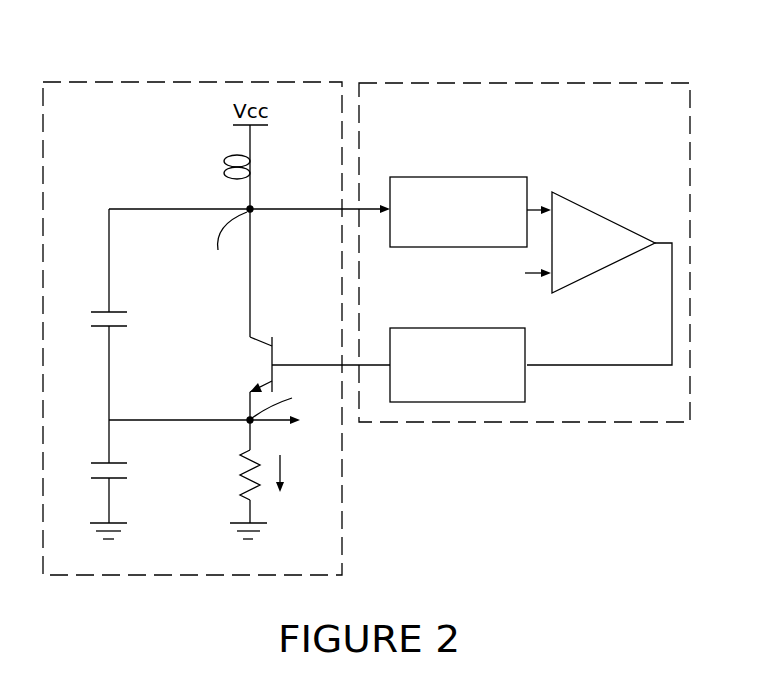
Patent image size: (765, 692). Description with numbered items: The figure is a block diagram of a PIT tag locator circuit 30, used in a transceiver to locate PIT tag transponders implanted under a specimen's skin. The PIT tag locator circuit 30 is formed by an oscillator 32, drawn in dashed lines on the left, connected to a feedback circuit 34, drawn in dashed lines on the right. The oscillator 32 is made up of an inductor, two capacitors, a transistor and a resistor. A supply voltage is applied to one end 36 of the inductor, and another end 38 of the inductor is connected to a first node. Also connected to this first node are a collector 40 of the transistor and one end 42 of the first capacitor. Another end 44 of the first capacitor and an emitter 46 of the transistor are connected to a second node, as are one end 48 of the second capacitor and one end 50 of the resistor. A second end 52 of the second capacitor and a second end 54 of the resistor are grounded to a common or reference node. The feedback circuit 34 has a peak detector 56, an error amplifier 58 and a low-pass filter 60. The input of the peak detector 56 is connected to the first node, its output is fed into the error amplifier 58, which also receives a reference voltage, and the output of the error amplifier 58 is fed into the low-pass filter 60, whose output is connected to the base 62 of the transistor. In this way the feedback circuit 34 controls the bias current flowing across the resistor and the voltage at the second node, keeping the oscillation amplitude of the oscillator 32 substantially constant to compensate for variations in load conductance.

The PIT tag locator circuit 30 is at (565, 535).
The oscillator 32 is at (120, 81).
The feedback circuit 34 is at (648, 423).
The one end of the inductor L1 36 is at (252, 146).
The another end of the inductor L1 38 is at (252, 193).
The collector of the transistor Q1 40 is at (244, 337).
The one end of the capacitor C1 42 is at (111, 285).
The another end of the capacitor C1 44 is at (108, 352).
The emitter of the transistor Q1 46 is at (249, 402).
The one end of the capacitor C2 48 is at (111, 443).
The one end of the resistor R 50 is at (248, 438).
The second end of the capacitor C2 52 is at (108, 505).
The second end of the resistor R 54 is at (252, 508).
The peak detector 56 is at (460, 176).
The error amplifier 58 is at (602, 215).
The low-pass filter 60 is at (527, 383).
The base of the transistor Q1 62 is at (289, 363).